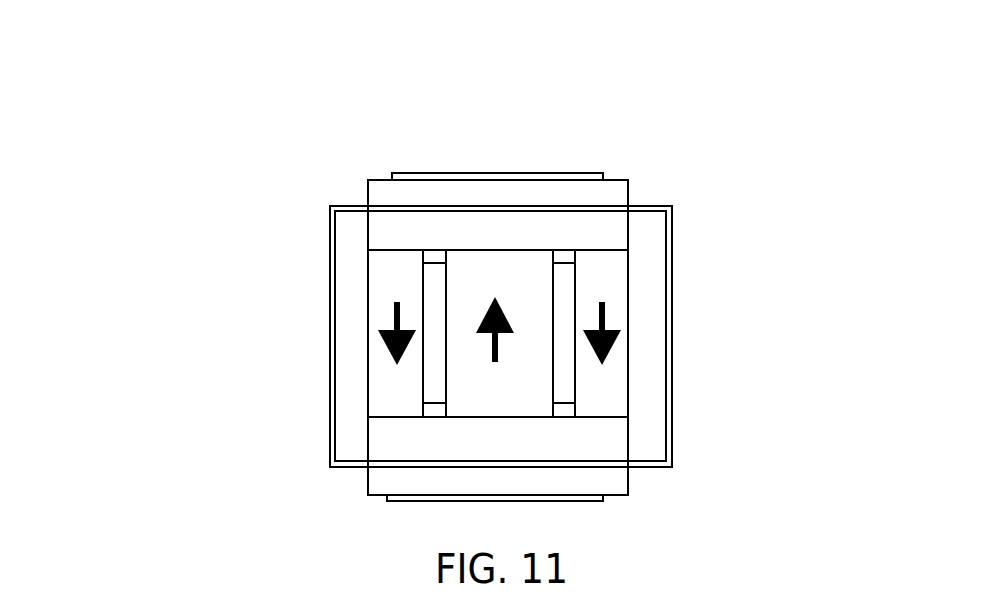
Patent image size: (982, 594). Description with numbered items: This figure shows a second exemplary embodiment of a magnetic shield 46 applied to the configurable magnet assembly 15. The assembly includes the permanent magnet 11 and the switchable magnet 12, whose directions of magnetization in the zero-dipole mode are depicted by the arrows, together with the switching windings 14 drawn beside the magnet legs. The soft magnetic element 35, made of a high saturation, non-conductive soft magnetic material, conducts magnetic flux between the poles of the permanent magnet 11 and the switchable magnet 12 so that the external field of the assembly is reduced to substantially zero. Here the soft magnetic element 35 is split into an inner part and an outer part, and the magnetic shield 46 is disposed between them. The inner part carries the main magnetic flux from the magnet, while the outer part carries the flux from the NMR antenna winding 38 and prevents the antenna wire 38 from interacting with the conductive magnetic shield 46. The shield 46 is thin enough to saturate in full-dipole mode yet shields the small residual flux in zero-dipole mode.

The permanent magnet 11 is at (398, 390).
The switchable magnet 12 is at (518, 342).
The switching windings 14 is at (435, 342).
The configurable magnet assembly 15 is at (243, 263).
The soft magnetic element 35 is at (612, 222).
The NMR antenna winding 38 is at (485, 178).
The magnetic shield 46 is at (673, 220).